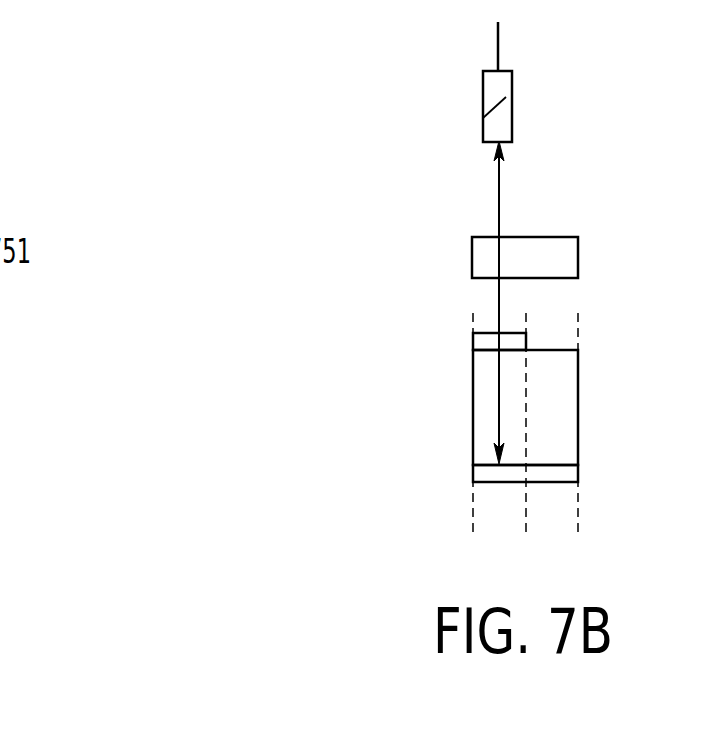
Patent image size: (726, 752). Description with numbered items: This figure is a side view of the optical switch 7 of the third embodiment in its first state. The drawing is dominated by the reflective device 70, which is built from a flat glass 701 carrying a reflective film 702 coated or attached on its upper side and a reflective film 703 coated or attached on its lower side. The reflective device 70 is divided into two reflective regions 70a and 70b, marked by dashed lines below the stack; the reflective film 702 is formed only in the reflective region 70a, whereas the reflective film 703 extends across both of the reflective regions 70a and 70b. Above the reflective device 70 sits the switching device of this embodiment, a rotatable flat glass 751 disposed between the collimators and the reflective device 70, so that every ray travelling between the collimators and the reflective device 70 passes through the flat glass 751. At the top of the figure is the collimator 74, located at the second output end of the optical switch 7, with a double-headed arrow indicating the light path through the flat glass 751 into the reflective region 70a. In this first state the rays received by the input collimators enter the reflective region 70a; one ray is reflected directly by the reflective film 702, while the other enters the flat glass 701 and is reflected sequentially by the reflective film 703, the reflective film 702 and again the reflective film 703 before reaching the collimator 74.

The optical switch 7 is at (372, 137).
The collimator 74 is at (507, 107).
The rotatable flat glass 751 is at (572, 257).
The reflective device 70 is at (310, 317).
The flat glass 701 is at (477, 372).
The reflective film 702 is at (477, 340).
The reflective film 703 is at (477, 478).
The reflective region 70a is at (499, 425).
The reflective region 70b is at (555, 425).